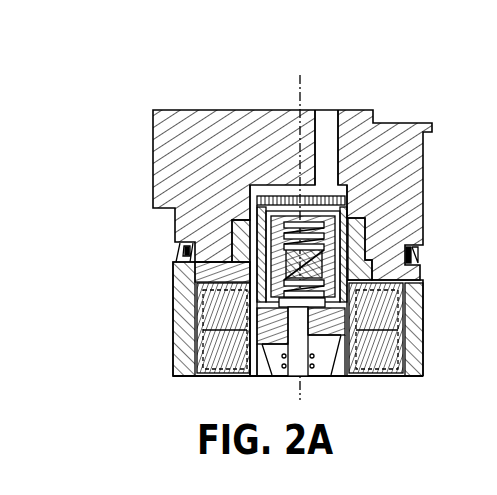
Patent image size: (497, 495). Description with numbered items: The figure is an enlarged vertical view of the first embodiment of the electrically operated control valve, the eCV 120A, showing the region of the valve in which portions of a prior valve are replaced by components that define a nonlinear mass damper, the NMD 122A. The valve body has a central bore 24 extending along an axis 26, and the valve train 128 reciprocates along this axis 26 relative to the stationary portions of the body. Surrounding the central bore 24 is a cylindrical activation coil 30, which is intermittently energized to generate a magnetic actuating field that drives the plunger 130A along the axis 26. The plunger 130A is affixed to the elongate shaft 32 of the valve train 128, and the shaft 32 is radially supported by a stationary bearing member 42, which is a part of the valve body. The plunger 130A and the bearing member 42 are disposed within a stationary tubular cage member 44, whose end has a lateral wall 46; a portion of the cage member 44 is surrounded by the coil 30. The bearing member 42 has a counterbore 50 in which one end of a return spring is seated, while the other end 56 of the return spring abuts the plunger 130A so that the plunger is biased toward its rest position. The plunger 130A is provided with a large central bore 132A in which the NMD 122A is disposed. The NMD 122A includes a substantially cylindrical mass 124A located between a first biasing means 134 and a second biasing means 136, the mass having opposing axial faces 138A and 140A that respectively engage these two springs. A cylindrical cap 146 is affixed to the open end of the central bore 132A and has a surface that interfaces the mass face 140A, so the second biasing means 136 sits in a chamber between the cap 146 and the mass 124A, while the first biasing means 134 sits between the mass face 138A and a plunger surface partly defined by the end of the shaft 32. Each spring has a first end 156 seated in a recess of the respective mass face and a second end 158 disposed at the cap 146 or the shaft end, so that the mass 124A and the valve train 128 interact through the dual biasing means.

The eCV (first embodiment) 120A is at (266, 52).
The central bore 24 is at (256, 176).
The cage member 44 is at (252, 208).
The axis 26 is at (312, 97).
The lateral wall 46 is at (270, 183).
The cylindrical cap 146 is at (297, 183).
The spring second end 158 is at (325, 190).
The NMD (first embodiment) 122A is at (356, 200).
The second biasing means 136 is at (324, 231).
The spring first end 156 is at (415, 252).
The first biasing means 134 is at (362, 268).
The central bore of plunger 132A is at (380, 300).
The other end of return spring 56 is at (335, 332).
The bearing member 42 is at (336, 373).
The counterbore 50 is at (292, 381).
The mass face 140A is at (240, 218).
The plunger 130A is at (232, 226).
The mass 124A is at (180, 250).
The mass face 138A is at (215, 299).
The shaft 32 is at (250, 322).
The valve train 128 is at (277, 345).
The activation coil 30 is at (200, 366).